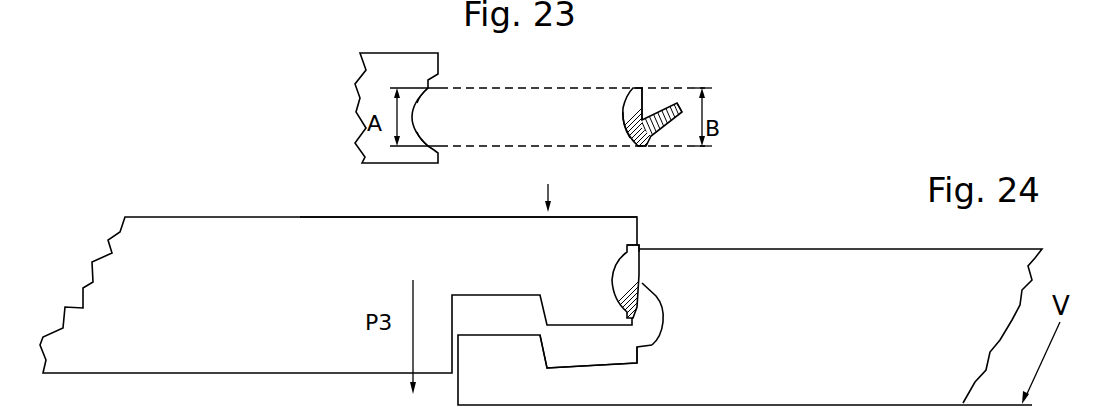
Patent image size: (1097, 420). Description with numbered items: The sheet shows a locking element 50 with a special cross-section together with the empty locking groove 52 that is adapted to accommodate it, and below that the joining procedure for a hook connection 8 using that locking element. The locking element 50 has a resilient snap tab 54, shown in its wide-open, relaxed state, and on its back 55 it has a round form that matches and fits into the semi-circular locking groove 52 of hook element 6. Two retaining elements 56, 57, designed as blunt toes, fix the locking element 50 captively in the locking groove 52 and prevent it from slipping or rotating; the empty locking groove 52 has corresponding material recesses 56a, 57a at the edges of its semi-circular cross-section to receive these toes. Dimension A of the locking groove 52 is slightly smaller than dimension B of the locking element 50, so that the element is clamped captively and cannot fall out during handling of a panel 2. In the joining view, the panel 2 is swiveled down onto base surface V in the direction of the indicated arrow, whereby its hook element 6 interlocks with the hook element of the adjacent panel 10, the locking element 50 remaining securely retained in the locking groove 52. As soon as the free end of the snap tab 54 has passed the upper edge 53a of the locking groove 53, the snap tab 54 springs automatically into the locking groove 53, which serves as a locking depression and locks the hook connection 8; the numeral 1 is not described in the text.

In FIG. 24, the first housing part 1 is at (576, 400).
In FIG. 24, the panel 2 is at (186, 292).
In FIG. 24, the hook element 6 is at (503, 256).
In FIG. 23, the hook connection 8 is at (548, 181).
In FIG. 24, the panel 10 is at (955, 310).
In FIG. 23, the locking element 50 is at (643, 107).
In FIG. 24, the locking element 50 is at (613, 278).
In FIG. 23, the locking groove 52 is at (416, 124).
In FIG. 24, the locking groove 53 is at (645, 336).
In FIG. 24, the upper edge 53a is at (644, 284).
In FIG. 23, the snap tab 54 is at (682, 110).
In FIG. 24, the snap tab 54 is at (639, 251).
In FIG. 23, the back 55 is at (626, 133).
In FIG. 23, the retaining element 56 is at (646, 147).
In FIG. 23, the material recess 56a is at (430, 146).
In FIG. 23, the retaining element 57 is at (640, 125).
In FIG. 23, the material recess 57a is at (424, 93).